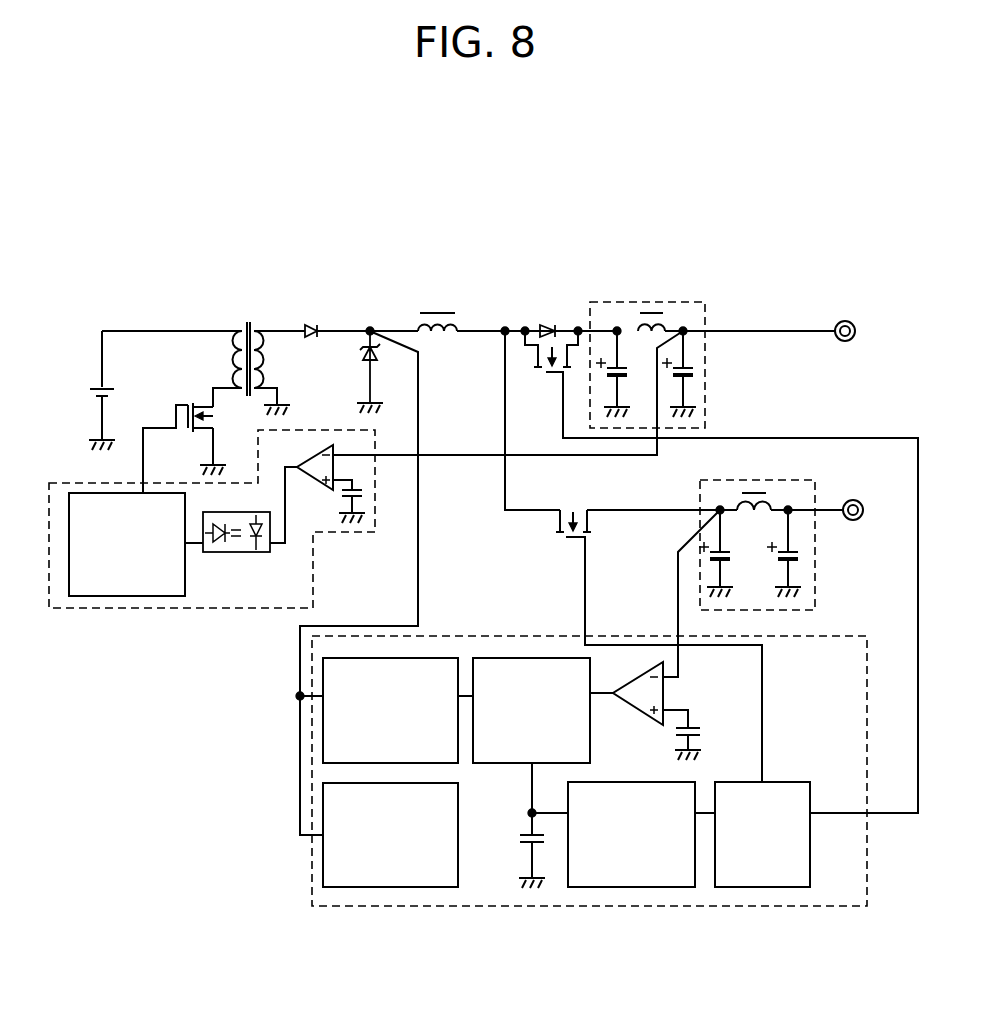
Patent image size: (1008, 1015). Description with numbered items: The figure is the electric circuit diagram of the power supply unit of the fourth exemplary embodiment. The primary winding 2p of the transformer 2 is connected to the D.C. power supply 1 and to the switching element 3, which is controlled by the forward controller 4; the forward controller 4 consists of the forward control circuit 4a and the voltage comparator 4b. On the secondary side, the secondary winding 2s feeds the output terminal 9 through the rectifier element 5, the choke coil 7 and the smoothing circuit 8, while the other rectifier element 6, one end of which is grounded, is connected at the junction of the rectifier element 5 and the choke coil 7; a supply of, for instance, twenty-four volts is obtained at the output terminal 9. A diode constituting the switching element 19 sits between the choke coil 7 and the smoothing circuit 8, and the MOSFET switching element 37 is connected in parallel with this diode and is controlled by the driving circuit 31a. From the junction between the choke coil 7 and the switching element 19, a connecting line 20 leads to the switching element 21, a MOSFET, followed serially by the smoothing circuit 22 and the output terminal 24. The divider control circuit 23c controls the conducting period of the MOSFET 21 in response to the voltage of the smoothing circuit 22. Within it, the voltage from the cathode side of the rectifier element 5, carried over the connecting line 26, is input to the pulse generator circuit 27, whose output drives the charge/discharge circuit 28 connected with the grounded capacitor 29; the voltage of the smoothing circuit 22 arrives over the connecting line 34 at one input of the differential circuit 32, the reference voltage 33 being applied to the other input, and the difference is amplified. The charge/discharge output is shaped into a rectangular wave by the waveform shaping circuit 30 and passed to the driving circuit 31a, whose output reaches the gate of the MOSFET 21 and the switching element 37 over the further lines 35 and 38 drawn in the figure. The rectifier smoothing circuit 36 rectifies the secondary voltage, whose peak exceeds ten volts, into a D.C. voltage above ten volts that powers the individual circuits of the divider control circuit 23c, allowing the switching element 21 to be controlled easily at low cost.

The D.C. power supply 1 is at (90, 372).
The transformer 2 is at (244, 325).
The primary winding 2p is at (233, 332).
The secondary winding 2s is at (268, 334).
The switching element 3 is at (186, 405).
The forward controller 4 is at (98, 610).
The forward control circuit 4a is at (170, 600).
The voltage comparator 4b is at (315, 478).
The rectifier element 5 is at (306, 325).
The rectifier element 6 is at (362, 350).
The choke coil 7 is at (437, 303).
The smoothing circuit 8 is at (653, 302).
The output terminal 9 is at (840, 320).
The switching element 19 is at (545, 318).
The connecting line 20 is at (505, 393).
The switching element 21 is at (568, 508).
The smoothing circuit 22 is at (812, 548).
The divider control circuit 23c is at (360, 908).
The output terminal 24 is at (858, 500).
The connecting line 26 is at (420, 490).
The pulse generator circuit 27 is at (340, 765).
The charge/discharge circuit 28 is at (508, 656).
The capacitor 29 is at (523, 855).
The waveform shaping circuit 30 is at (612, 888).
The driving circuit 31a is at (750, 888).
The differential circuit 32 is at (666, 692).
The reference voltage 33 is at (705, 732).
The connecting line 34 is at (676, 610).
The gate drive line 35 is at (582, 597).
The rectifier smoothing circuit 36 is at (320, 860).
The switching element 37 is at (560, 375).
The drive signal line 38 is at (760, 437).